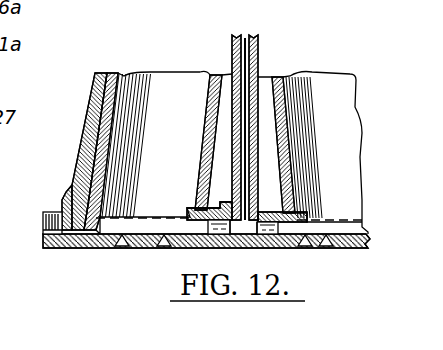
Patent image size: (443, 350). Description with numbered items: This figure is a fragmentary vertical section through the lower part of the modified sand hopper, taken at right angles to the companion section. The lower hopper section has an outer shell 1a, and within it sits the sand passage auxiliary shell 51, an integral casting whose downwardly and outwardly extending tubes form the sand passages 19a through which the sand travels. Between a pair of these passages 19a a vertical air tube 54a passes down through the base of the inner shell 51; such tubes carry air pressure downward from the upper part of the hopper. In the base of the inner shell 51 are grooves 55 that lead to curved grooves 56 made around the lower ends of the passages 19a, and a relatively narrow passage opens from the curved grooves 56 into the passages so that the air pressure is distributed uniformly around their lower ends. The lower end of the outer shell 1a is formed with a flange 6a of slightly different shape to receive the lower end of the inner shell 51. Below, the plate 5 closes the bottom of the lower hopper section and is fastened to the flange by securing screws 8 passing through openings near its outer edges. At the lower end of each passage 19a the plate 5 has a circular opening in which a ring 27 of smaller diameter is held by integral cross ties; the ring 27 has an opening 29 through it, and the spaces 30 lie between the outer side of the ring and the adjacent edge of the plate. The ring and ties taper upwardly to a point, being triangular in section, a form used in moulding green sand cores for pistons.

The outer shell 1a is at (84, 162).
The flange 6a is at (43, 210).
The securing screws 8 is at (44, 240).
The sand passages 19a is at (232, 152).
The ring 27 is at (137, 248).
The opening 29 is at (138, 247).
The spaces 30 is at (107, 247).
The sand passage auxiliary shell 51 is at (97, 160).
The divider rod 54a is at (260, 50).
The grooves 55 is at (242, 222).
The curved grooves 56 is at (197, 225).
The plate 5 is at (255, 240).